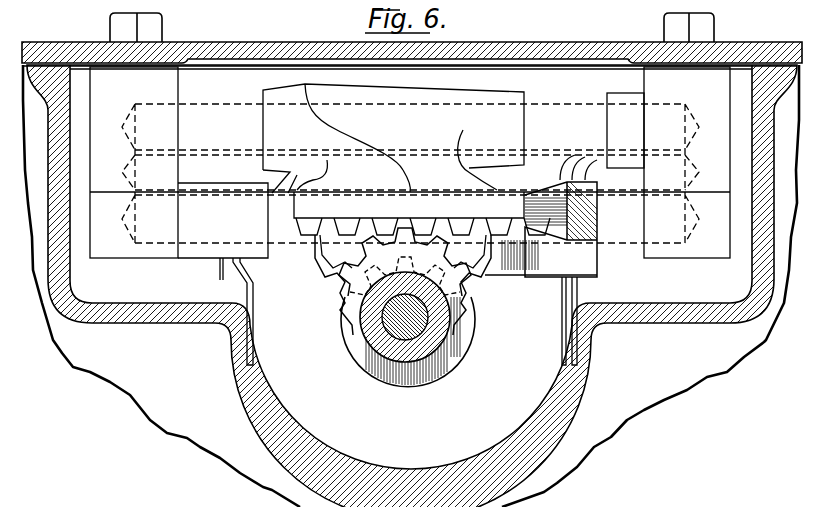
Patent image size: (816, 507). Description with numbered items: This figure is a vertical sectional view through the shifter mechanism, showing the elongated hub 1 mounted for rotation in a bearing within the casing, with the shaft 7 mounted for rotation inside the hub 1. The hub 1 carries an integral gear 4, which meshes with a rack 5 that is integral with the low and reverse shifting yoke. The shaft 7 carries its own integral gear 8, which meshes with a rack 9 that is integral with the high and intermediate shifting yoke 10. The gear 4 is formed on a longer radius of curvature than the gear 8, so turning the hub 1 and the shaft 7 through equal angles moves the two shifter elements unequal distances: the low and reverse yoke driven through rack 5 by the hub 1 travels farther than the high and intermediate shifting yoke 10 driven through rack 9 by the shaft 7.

The hub 1 is at (448, 345).
The gear 4 is at (339, 293).
The rack 5 is at (525, 205).
The shaft 7 is at (400, 352).
The gear 8 is at (452, 308).
The rack 9 is at (485, 270).
The high and intermediate shifting yoke 10 is at (552, 318).